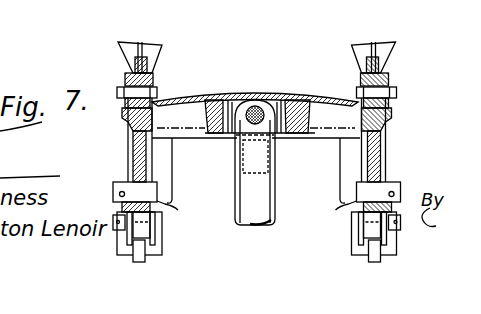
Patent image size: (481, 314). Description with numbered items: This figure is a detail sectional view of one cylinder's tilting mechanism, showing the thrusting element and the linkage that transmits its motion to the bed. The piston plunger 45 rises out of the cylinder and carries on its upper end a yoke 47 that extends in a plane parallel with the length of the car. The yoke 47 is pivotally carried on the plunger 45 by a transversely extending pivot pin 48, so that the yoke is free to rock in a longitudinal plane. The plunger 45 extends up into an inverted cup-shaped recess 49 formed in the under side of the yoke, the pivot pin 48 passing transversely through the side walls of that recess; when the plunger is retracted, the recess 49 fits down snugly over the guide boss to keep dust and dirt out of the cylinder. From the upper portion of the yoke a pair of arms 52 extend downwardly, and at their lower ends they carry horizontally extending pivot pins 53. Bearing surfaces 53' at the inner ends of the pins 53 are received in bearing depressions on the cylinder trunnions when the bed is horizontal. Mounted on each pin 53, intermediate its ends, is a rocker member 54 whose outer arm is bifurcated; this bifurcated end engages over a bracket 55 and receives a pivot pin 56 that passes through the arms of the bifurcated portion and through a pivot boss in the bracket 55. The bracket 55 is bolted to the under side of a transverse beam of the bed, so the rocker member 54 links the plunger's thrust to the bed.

The piston plunger 45 is at (257, 224).
The yoke 47 is at (292, 98).
The pivot pin 48 is at (254, 106).
The inverted cup-shaped recess 49 is at (229, 131).
The arms 52 is at (173, 184).
The pivot pins 53 is at (256, 177).
The bearing surfaces 53' is at (257, 218).
The rocker member 54 is at (136, 146).
The bracket 55 is at (158, 63).
The pivot pin 56 is at (152, 92).